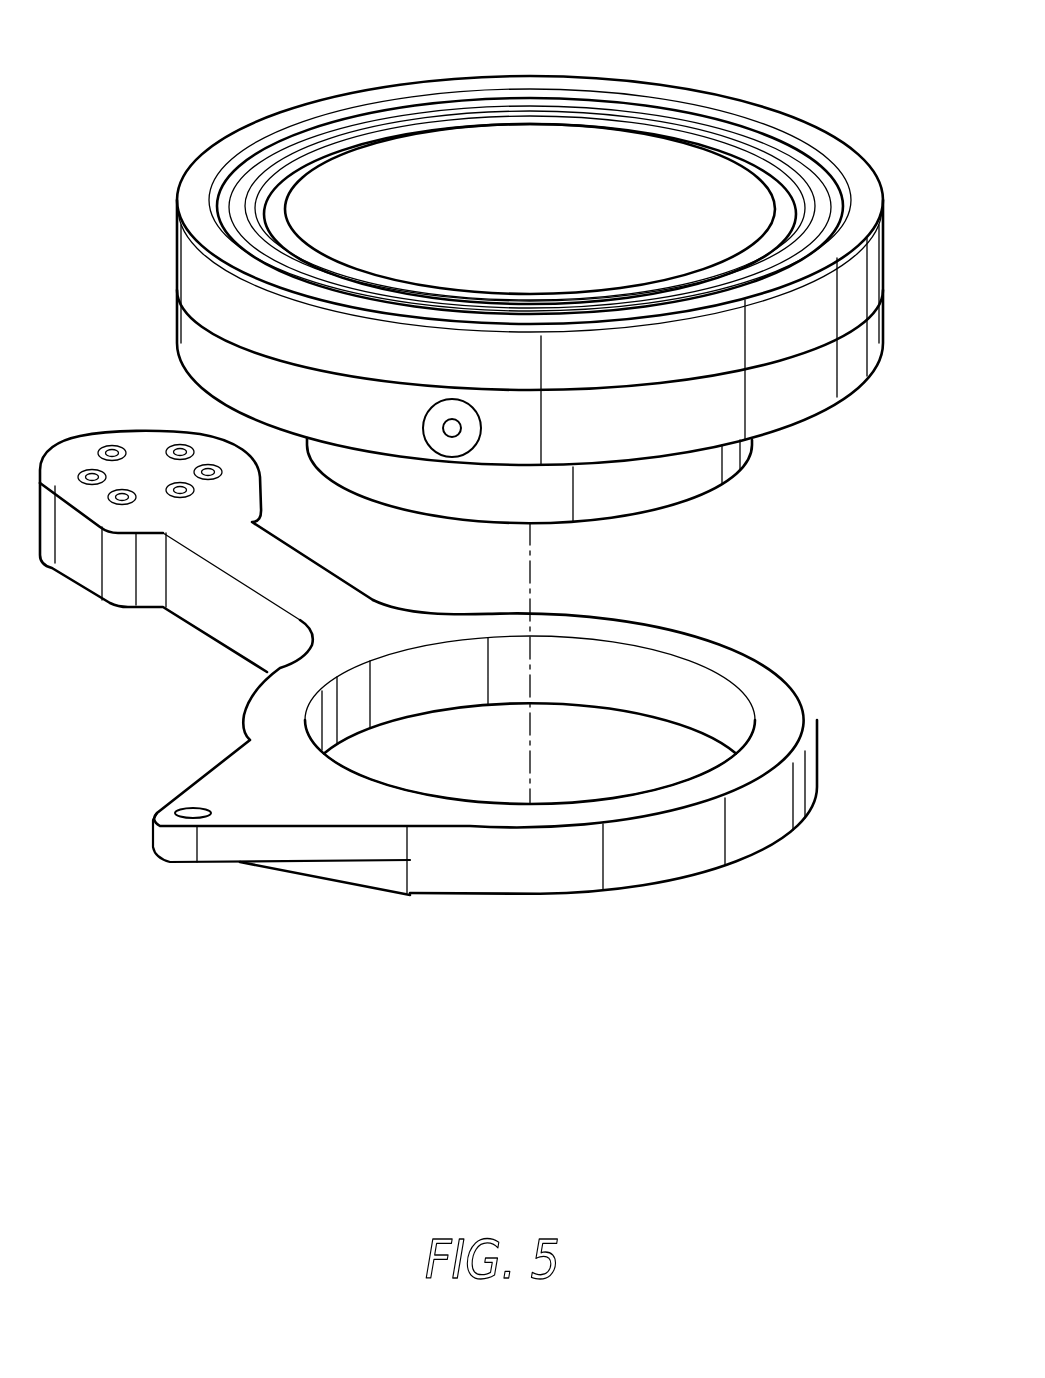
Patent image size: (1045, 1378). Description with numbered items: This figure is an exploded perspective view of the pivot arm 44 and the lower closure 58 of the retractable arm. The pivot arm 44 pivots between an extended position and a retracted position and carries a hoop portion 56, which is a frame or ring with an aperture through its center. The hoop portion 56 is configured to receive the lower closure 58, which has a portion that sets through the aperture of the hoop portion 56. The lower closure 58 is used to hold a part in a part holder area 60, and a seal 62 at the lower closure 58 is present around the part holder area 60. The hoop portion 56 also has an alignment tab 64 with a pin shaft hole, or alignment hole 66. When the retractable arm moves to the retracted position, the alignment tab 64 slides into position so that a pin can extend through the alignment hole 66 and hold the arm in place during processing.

The pivot arm 44 is at (262, 567).
The hoop portion 56 is at (660, 856).
The lower closure 58 is at (430, 35).
The part holder area 60 is at (547, 218).
The seal 62 is at (273, 180).
The alignment tab 64 is at (272, 843).
The alignment hole 66 is at (193, 807).